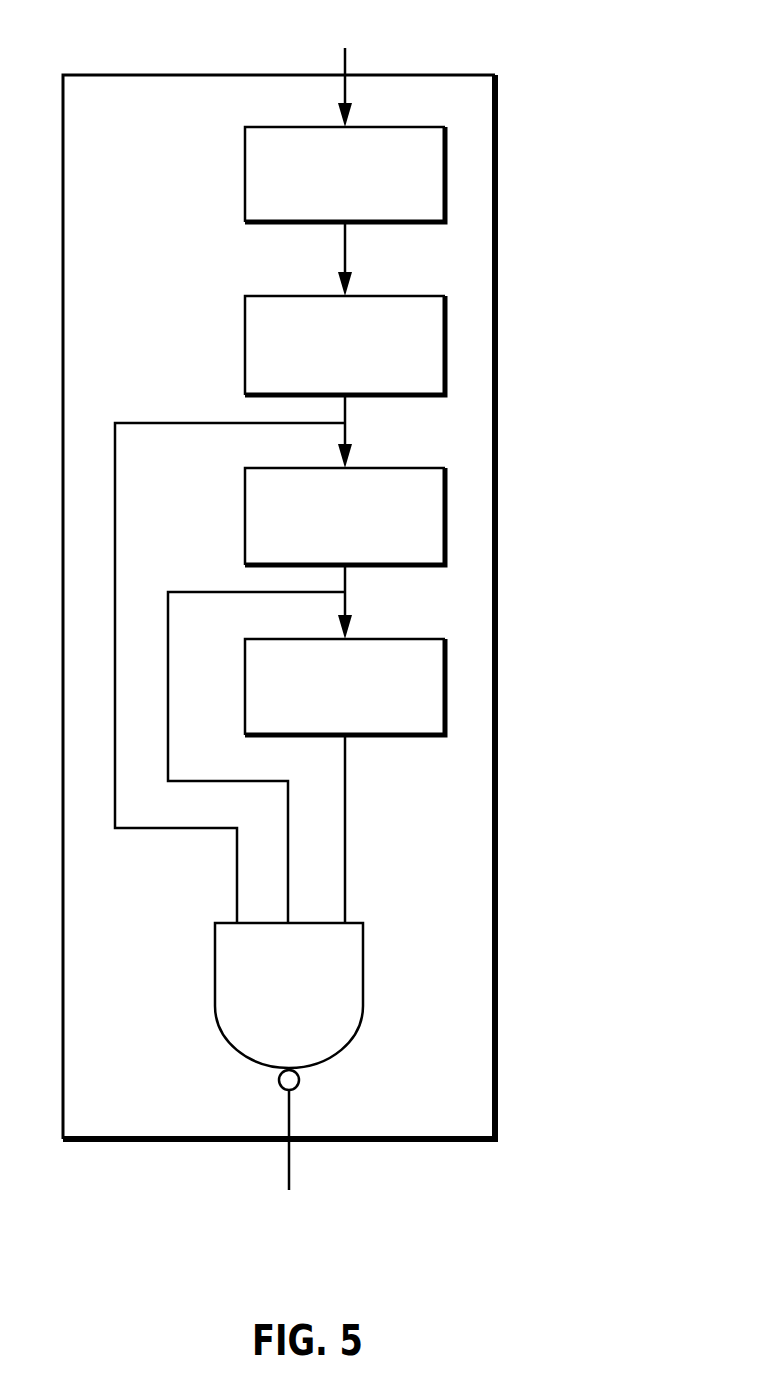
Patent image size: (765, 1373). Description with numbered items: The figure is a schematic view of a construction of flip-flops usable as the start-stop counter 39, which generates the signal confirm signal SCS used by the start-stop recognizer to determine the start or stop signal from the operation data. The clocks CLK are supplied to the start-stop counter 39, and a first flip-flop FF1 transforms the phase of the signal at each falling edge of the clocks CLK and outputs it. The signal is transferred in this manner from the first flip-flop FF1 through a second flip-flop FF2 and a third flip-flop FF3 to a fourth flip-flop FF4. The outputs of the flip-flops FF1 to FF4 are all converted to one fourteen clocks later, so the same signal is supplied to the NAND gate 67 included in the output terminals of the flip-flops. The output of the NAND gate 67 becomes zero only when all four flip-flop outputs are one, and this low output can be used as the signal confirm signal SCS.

The start-stop counter 39 is at (327, 595).
The NAND gate 67 is at (363, 958).
The clocks CLK is at (345, 63).
The first flip-flop FF1 is at (345, 174).
The second flip-flop FF2 is at (345, 345).
The third flip-flop FF3 is at (345, 516).
The fourth flip-flop FF4 is at (345, 687).